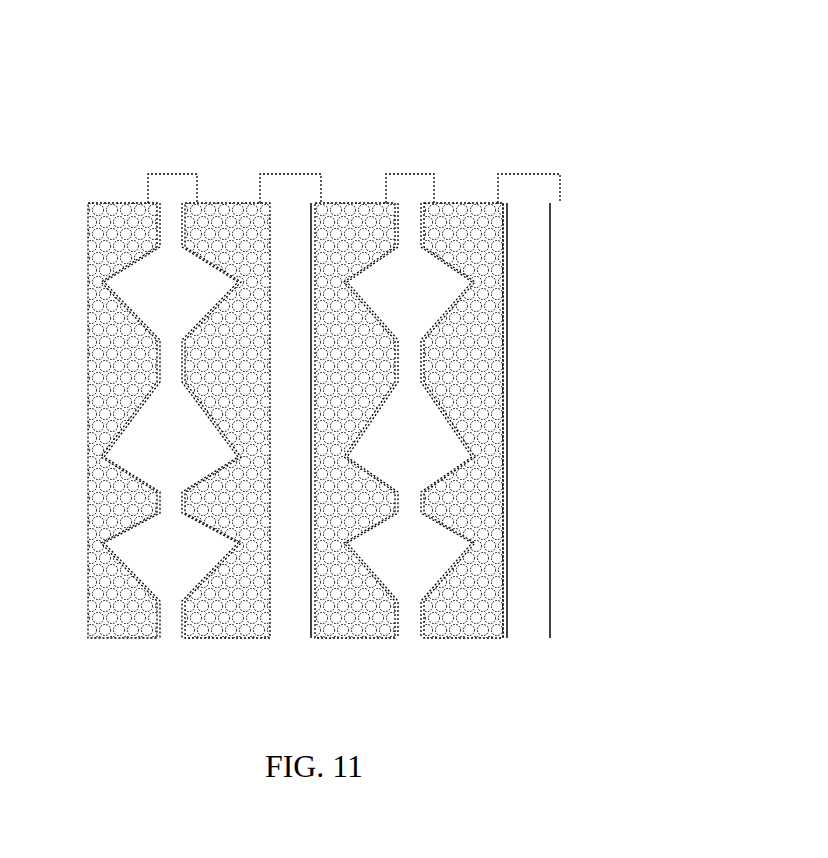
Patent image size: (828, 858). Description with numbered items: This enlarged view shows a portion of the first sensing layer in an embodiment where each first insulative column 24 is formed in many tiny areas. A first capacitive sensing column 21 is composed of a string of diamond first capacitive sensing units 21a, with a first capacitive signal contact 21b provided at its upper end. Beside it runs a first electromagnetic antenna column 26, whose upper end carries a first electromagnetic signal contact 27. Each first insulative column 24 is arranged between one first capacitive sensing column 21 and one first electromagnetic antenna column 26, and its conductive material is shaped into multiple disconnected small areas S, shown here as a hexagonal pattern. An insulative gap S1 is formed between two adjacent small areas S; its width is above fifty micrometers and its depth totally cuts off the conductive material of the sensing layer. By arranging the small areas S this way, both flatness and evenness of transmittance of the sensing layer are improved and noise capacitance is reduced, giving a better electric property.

The first capacitive sensing column 21 is at (374, 319).
The first capacitive sensing unit 21a is at (442, 542).
The first capacitive signal contact 21b is at (430, 173).
The first insulative column 24 is at (346, 205).
The first electromagnetic antenna column 26 is at (435, 319).
The first electromagnetic signal contact 27 is at (552, 173).
The small area S is at (498, 373).
The insulative gap S1 is at (502, 358).